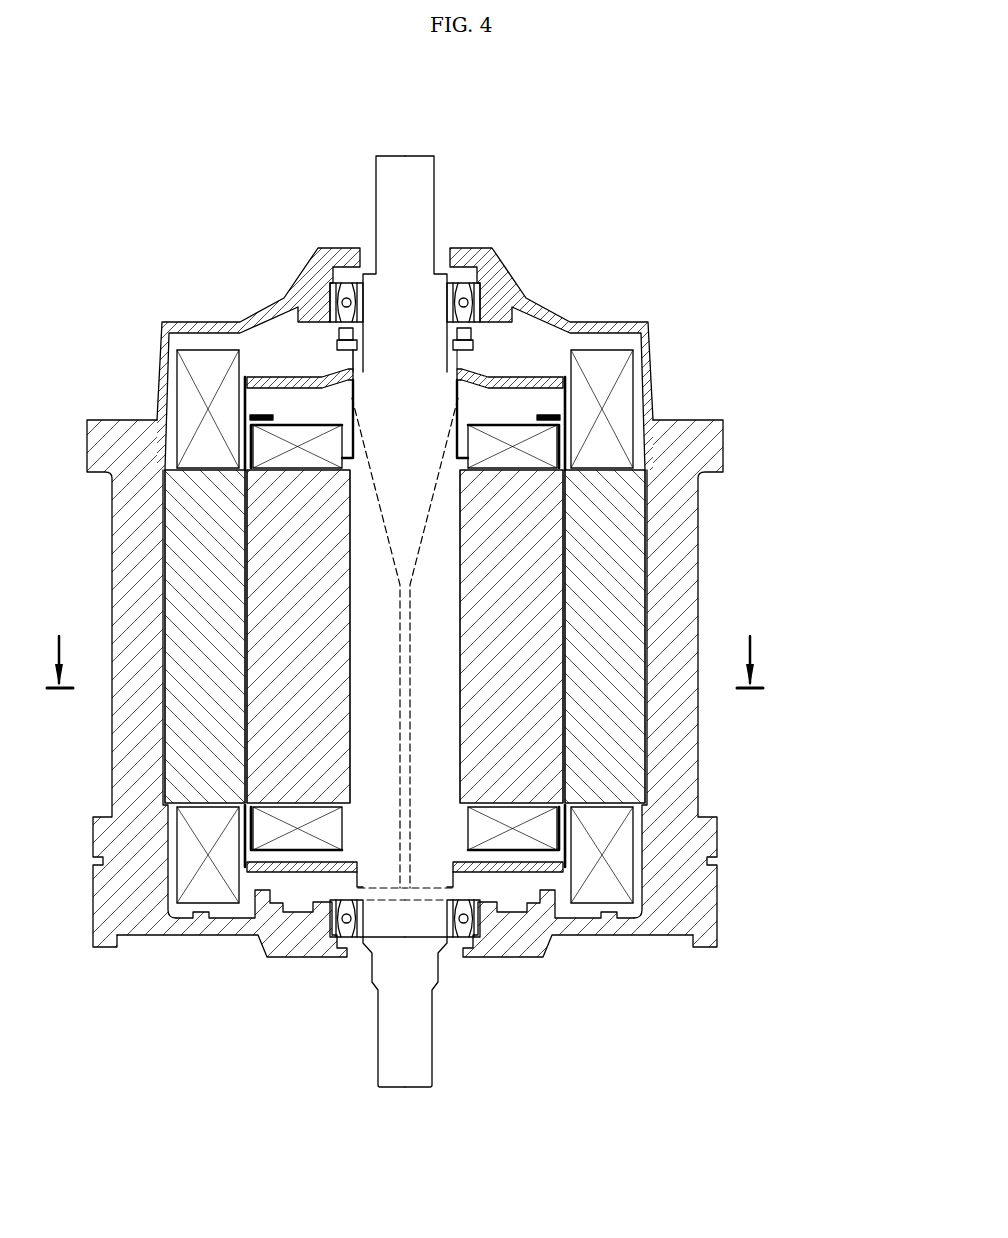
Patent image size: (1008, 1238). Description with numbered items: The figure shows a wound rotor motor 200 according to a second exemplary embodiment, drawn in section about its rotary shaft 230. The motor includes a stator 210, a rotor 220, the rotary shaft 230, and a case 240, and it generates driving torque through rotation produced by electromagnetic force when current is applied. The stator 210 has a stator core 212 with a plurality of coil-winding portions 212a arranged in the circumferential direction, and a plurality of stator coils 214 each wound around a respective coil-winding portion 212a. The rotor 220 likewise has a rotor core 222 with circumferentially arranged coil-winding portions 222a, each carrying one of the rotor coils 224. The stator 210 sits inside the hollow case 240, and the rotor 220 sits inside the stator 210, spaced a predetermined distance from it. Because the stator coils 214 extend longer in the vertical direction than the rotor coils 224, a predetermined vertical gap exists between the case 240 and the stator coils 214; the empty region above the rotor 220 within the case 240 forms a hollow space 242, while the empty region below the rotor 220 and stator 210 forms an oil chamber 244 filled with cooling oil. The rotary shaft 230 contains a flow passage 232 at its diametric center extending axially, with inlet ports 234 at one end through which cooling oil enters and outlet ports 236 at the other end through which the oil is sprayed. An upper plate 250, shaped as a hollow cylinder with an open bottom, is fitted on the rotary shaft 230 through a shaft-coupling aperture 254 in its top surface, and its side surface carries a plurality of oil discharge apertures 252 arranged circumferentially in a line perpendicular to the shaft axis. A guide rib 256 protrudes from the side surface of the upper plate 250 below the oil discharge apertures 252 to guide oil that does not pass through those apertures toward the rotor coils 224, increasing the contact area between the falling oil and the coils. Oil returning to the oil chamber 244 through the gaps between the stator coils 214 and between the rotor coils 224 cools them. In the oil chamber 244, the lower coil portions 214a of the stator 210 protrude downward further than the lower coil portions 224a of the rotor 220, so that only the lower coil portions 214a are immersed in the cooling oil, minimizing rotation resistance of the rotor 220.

The wound rotor motor 200 is at (537, 204).
The stator 210 is at (532, 684).
The stator core 212 is at (506, 585).
The coil-winding portions 212a is at (592, 468).
The stator coils 214 is at (633, 373).
The lower coil portions 214a is at (618, 862).
The rotor 220 is at (453, 607).
The rotor core 222 is at (562, 345).
The coil-winding portions 222a is at (522, 457).
The rotor coils 224 is at (493, 423).
The lower coil portions 224a is at (515, 850).
The rotary shaft 230 is at (408, 163).
The flow passage 232 is at (405, 790).
The inlet ports 234 is at (422, 893).
The outlet ports 236 is at (380, 520).
The case 240 is at (668, 555).
The hollow space 242 is at (288, 397).
The oil chamber 244 is at (252, 910).
The upper plate 250 is at (290, 362).
The oil discharge apertures 252 is at (247, 397).
The shaft-coupling aperture 254 is at (353, 370).
The guide rib 256 is at (268, 420).